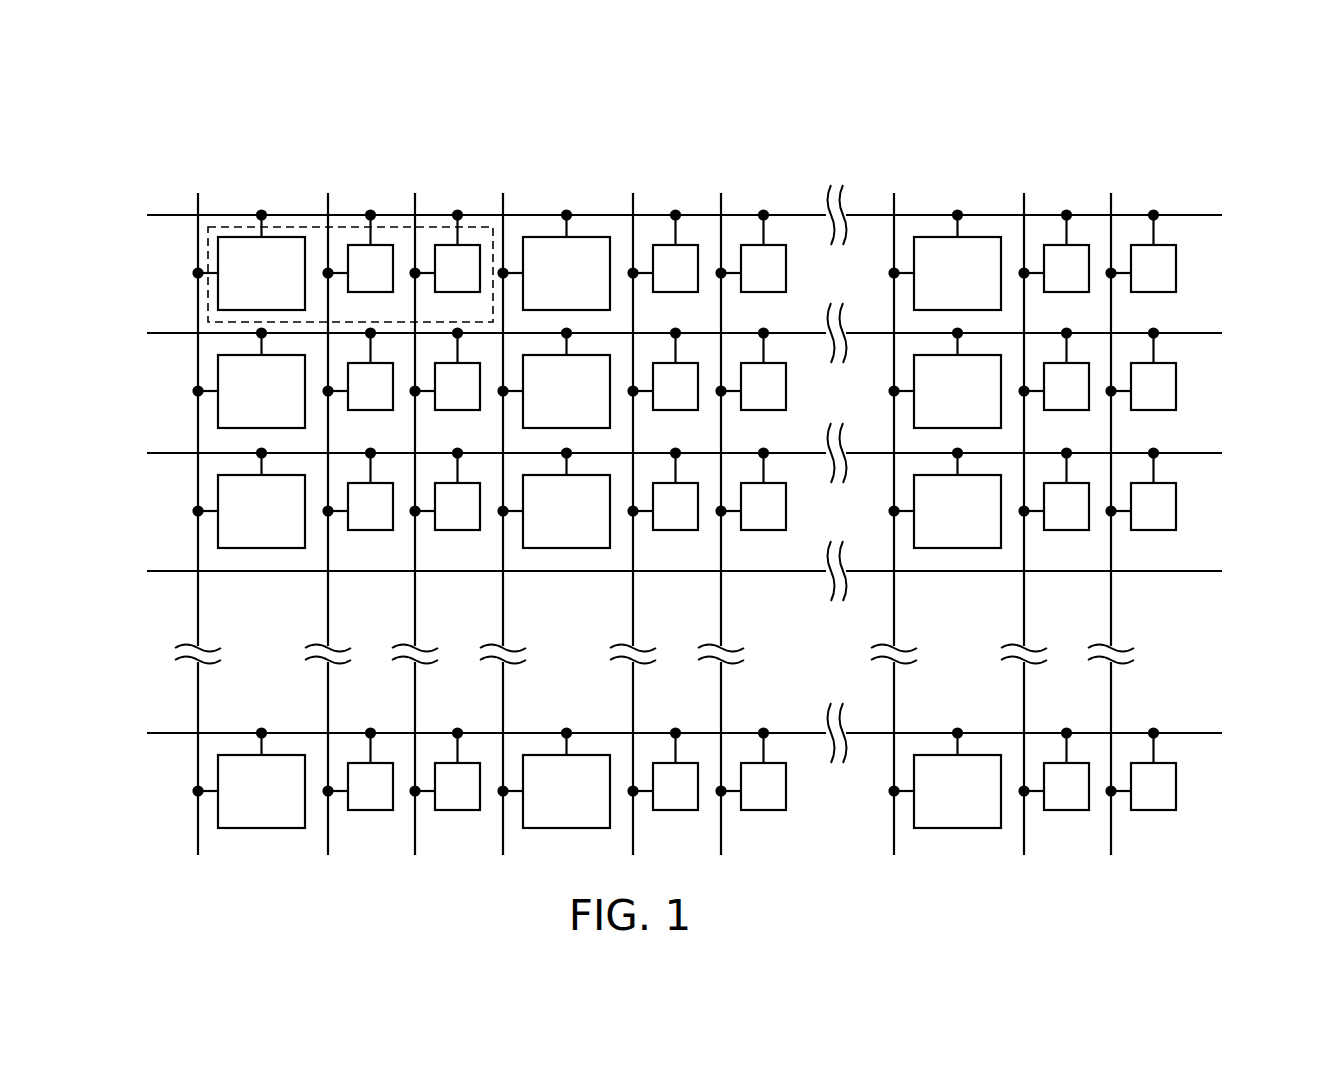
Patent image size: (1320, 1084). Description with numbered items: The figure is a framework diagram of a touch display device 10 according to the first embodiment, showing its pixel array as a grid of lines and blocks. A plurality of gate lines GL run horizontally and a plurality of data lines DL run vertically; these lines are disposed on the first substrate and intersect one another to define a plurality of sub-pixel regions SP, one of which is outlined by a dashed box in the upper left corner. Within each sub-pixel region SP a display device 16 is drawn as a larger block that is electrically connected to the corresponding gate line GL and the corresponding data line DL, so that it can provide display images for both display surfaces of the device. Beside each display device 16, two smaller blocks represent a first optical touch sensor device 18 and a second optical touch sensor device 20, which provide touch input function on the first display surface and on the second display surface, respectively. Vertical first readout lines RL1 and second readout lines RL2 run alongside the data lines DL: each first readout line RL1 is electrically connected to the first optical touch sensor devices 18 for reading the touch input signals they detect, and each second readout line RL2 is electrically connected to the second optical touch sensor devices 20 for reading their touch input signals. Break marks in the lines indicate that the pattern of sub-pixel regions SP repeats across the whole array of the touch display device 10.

The touch display device 10 is at (1178, 155).
The display device 16 is at (247, 289).
The first optical touch sensor device 18 is at (354, 283).
The second optical touch sensor device 20 is at (442, 283).
The sub-pixel region SP is at (208, 242).
The gate line GL is at (661, 474).
The data line DL is at (546, 504).
The first readout line RL1 is at (674, 504).
The second readout line RL2 is at (761, 504).